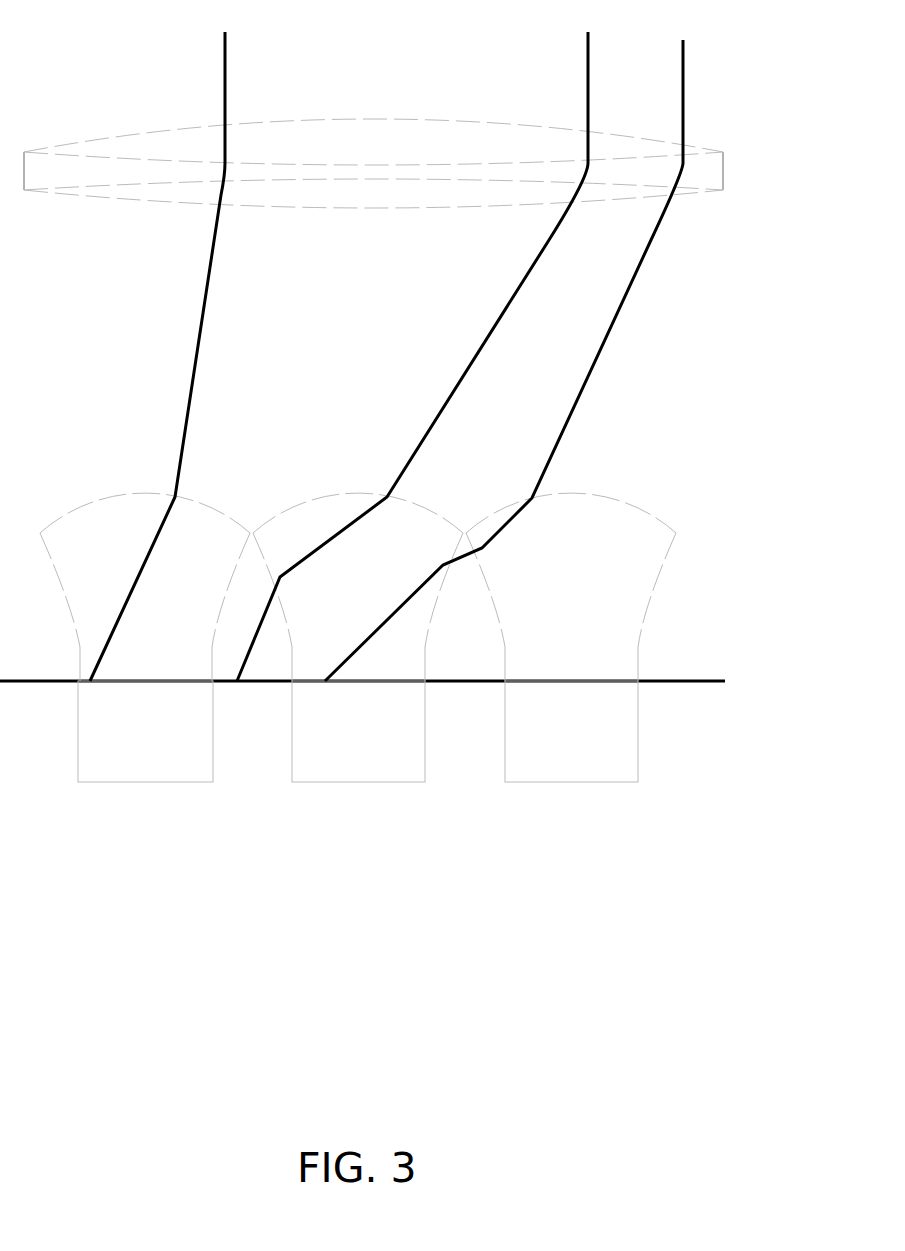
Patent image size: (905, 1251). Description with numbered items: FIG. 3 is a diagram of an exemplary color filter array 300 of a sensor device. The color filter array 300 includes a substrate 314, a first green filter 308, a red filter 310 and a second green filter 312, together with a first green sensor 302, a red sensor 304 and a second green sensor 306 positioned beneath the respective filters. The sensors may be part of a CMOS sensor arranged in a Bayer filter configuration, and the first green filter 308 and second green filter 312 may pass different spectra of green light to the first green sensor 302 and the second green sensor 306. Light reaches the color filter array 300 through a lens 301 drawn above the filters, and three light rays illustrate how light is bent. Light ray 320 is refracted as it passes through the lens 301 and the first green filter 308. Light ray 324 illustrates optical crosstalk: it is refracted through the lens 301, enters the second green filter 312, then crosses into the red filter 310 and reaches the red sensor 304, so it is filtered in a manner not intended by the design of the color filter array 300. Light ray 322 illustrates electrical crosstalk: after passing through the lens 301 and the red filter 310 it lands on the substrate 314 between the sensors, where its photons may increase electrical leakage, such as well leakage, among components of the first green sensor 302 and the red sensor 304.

The color filter array 300 is at (65, 314).
The lens 301 is at (740, 168).
The green 1 sensor 302 is at (145, 731).
The red sensor 304 is at (358, 731).
The green 2 sensor 306 is at (571, 731).
The green 1 filter 308 is at (153, 479).
The red filter 310 is at (358, 479).
The green 2 filter 312 is at (571, 479).
The substrate 314 is at (679, 667).
The light ray 320 is at (164, 343).
The light ray 322 is at (425, 341).
The light ray 324 is at (515, 347).